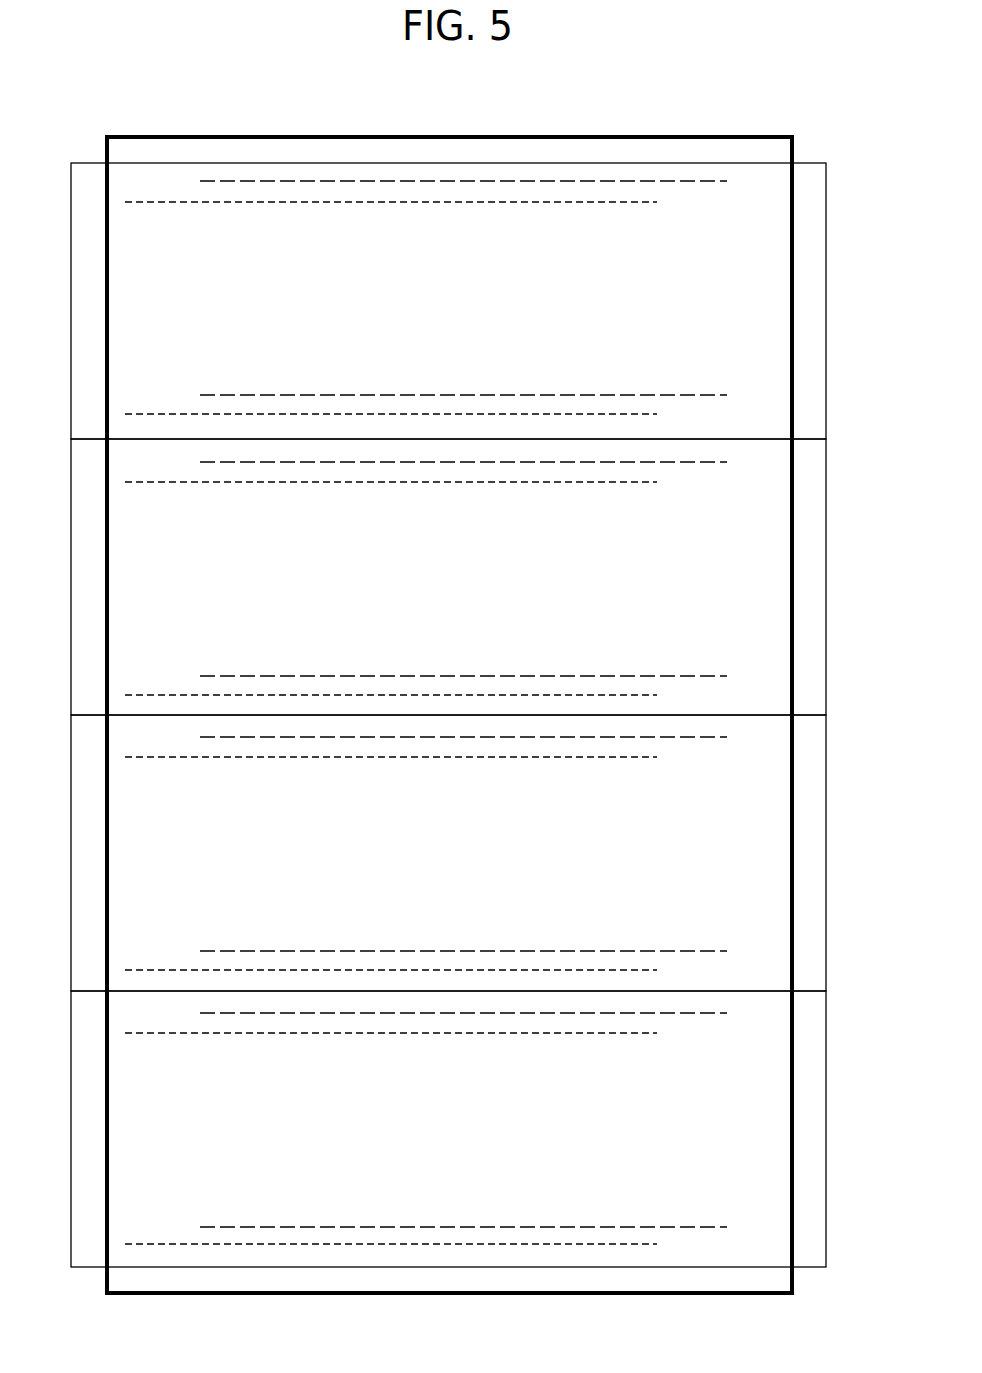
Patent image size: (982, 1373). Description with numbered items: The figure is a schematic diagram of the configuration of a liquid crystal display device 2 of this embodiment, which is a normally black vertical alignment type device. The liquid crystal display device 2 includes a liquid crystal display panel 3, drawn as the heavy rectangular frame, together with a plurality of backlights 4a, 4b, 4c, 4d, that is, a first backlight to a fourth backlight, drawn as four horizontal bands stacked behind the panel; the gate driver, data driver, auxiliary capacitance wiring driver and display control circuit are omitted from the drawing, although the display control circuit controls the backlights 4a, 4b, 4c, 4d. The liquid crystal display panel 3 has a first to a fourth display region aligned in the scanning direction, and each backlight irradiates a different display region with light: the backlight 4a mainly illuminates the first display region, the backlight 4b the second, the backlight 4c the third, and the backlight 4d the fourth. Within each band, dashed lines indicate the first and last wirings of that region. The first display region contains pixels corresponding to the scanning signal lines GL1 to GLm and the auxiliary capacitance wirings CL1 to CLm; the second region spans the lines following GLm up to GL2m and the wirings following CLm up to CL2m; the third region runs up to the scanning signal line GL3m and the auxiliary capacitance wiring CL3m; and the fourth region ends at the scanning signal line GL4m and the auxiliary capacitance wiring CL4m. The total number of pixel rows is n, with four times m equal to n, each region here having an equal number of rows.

The liquid crystal display device 2 is at (567, 112).
The liquid crystal display panel 3 is at (708, 136).
The first backlight 4a is at (828, 288).
The second backlight 4b is at (828, 582).
The third backlight 4c is at (828, 870).
The fourth backlight 4d is at (828, 1153).
The scanning signal line GL1 is at (140, 204).
The scanning signal line GLm is at (152, 413).
The scanning signal line GL2m is at (152, 694).
The scanning signal line GL3m is at (152, 968).
The scanning signal line GL4m is at (152, 1243).
The auxiliary capacitance wiring CL1 is at (700, 183).
The auxiliary capacitance wiring CLm is at (700, 394).
The auxiliary capacitance wiring CL2m is at (696, 675).
The auxiliary capacitance wiring CL3m is at (697, 949).
The auxiliary capacitance wiring CL4m is at (694, 1225).